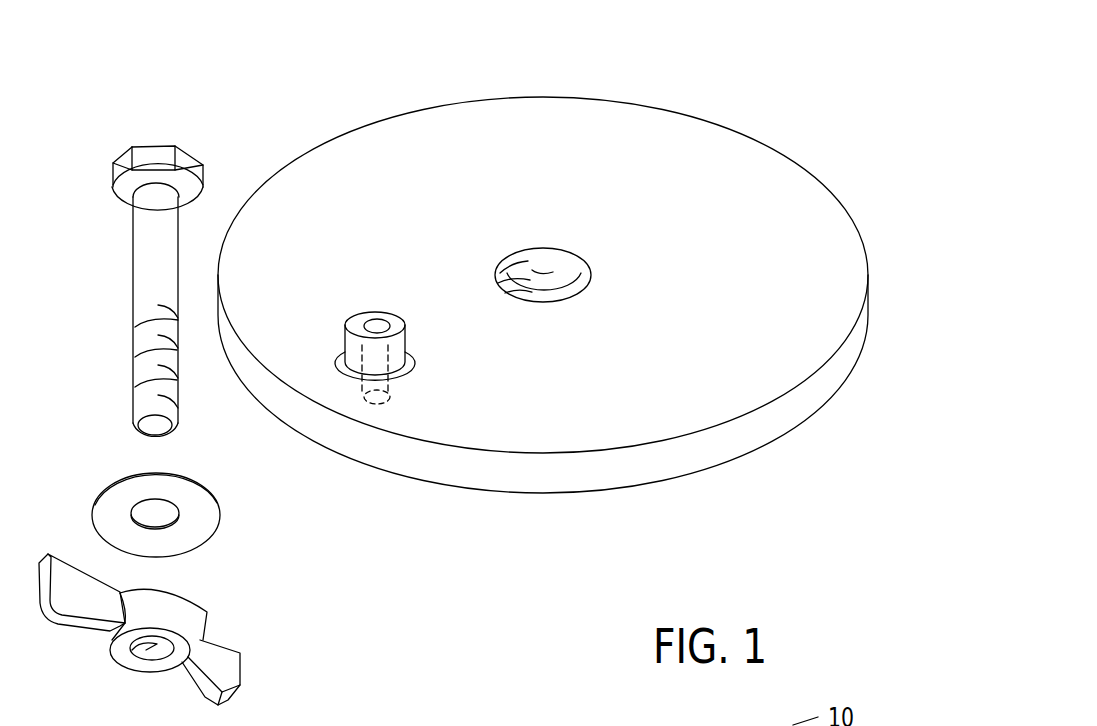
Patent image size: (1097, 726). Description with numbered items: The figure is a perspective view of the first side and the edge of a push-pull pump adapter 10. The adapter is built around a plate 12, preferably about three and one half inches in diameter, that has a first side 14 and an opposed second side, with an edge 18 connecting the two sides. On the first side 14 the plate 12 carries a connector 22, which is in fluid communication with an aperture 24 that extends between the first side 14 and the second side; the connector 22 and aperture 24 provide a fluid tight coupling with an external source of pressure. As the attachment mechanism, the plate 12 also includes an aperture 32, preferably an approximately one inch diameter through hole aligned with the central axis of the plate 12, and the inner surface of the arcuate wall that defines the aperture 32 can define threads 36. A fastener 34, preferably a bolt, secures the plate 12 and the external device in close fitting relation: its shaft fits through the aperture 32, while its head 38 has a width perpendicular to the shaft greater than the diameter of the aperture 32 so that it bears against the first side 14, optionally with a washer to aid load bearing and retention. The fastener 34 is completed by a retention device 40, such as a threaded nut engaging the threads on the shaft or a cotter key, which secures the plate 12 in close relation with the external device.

The push-pull pump adapter 10 is at (677, 85).
The plate 12 is at (567, 124).
The first side 14 is at (731, 132).
The edge 18 is at (805, 408).
The connector 22 is at (408, 339).
The aperture 24 is at (382, 407).
The aperture 32 is at (504, 257).
The threads 36 is at (549, 268).
The fastener 34 is at (128, 276).
The head 38 is at (145, 143).
The retention device 40 is at (207, 613).